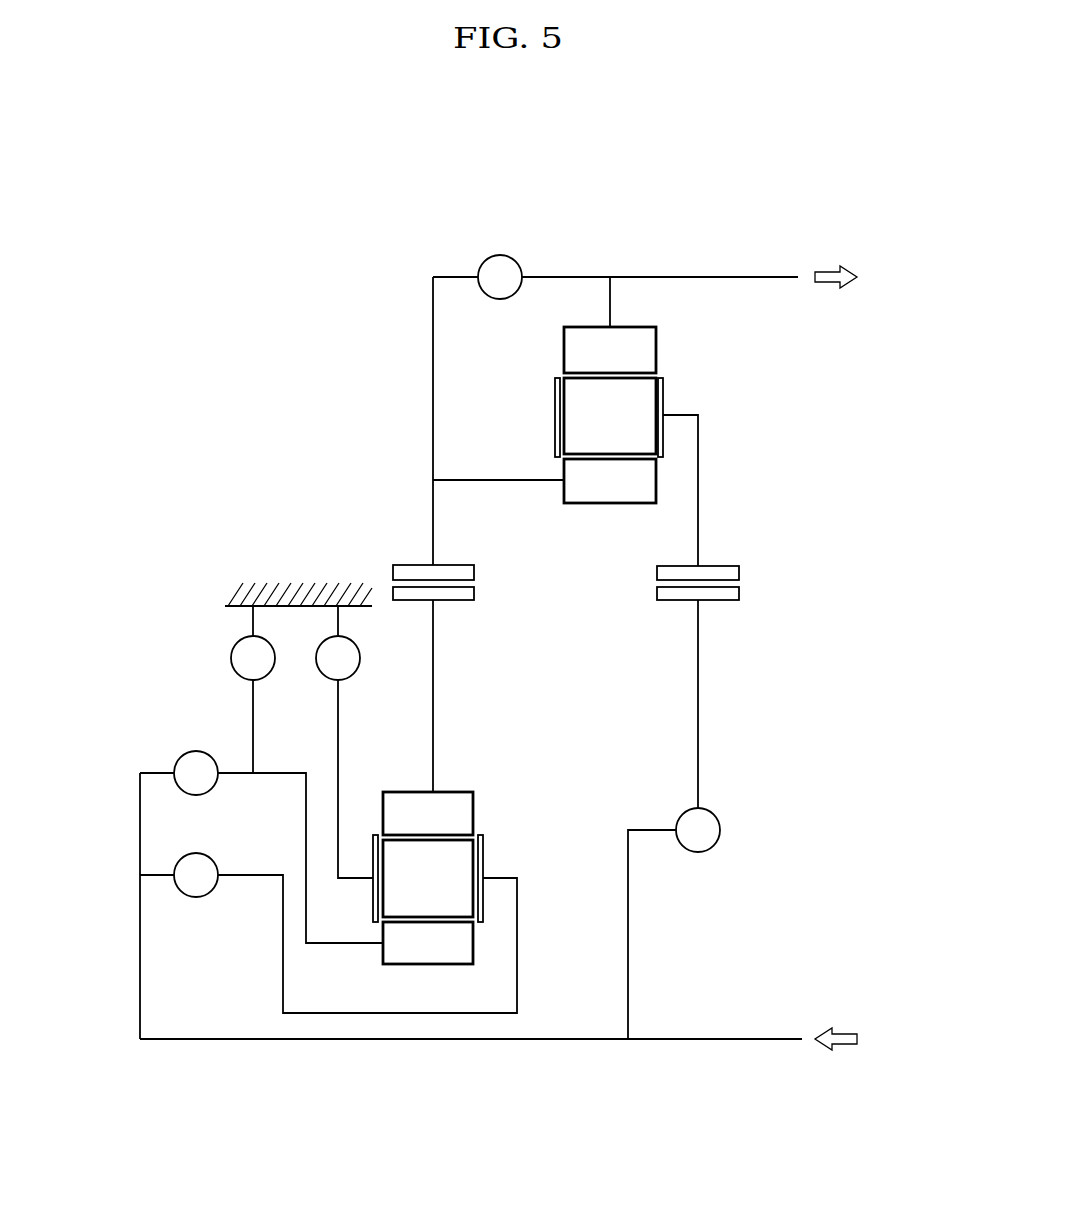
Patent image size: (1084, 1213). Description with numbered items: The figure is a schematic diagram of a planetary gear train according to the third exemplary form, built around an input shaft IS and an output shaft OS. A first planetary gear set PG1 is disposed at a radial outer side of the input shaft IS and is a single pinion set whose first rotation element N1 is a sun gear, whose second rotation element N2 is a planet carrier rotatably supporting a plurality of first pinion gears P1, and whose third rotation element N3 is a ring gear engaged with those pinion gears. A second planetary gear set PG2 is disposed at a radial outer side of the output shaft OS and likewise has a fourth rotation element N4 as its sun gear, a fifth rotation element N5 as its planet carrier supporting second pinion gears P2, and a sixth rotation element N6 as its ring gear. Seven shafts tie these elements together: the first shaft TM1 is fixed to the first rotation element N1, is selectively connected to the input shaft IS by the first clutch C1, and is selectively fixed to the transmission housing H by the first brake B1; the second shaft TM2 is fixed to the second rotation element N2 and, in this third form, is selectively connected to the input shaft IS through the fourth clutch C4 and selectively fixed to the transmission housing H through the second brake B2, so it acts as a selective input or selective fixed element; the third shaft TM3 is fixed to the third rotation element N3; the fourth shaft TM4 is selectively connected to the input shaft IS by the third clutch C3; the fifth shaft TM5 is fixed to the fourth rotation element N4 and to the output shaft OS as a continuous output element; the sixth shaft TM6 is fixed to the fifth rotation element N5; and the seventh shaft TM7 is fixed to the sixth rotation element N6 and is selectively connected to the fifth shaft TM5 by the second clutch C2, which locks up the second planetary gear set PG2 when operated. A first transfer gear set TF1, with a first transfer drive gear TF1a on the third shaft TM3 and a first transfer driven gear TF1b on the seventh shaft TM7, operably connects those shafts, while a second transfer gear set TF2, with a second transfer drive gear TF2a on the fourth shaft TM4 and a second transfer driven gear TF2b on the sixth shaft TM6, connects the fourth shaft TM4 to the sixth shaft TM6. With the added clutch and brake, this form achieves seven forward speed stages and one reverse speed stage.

The first planetary gear set PG1 is at (464, 949).
The second planetary gear set PG2 is at (581, 343).
The first pinion gears P1 is at (428, 878).
The second pinion gears P2 is at (610, 416).
The first rotation element N1 is at (428, 943).
The second rotation element N2 is at (464, 860).
The third rotation element N3 is at (428, 813).
The fourth rotation element N4 is at (610, 350).
The fifth rotation element N5 is at (574, 395).
The sixth rotation element N6 is at (610, 481).
The first shaft TM1 is at (306, 826).
The second shaft TM2 is at (517, 947).
The third shaft TM3 is at (433, 703).
The fourth shaft TM4 is at (698, 703).
The fifth shaft TM5 is at (608, 288).
The sixth shaft TM6 is at (698, 480).
The seventh shaft TM7 is at (433, 395).
The first clutch C1 is at (179, 773).
The second clutch C2 is at (500, 277).
The third clutch C3 is at (698, 830).
The fourth clutch C4 is at (179, 875).
The first brake B1 is at (253, 643).
The second brake B2 is at (344, 742).
The transmission housing H is at (300, 590).
The first transfer gear set TF1 is at (492, 589).
The first transfer drive gear TF1a is at (471, 608).
The first transfer driven gear TF1b is at (474, 572).
The second transfer gear set TF2 is at (757, 589).
The second transfer drive gear TF2a is at (735, 608).
The second transfer driven gear TF2b is at (739, 573).
The input shaft IS is at (765, 1039).
The output shaft OS is at (767, 277).